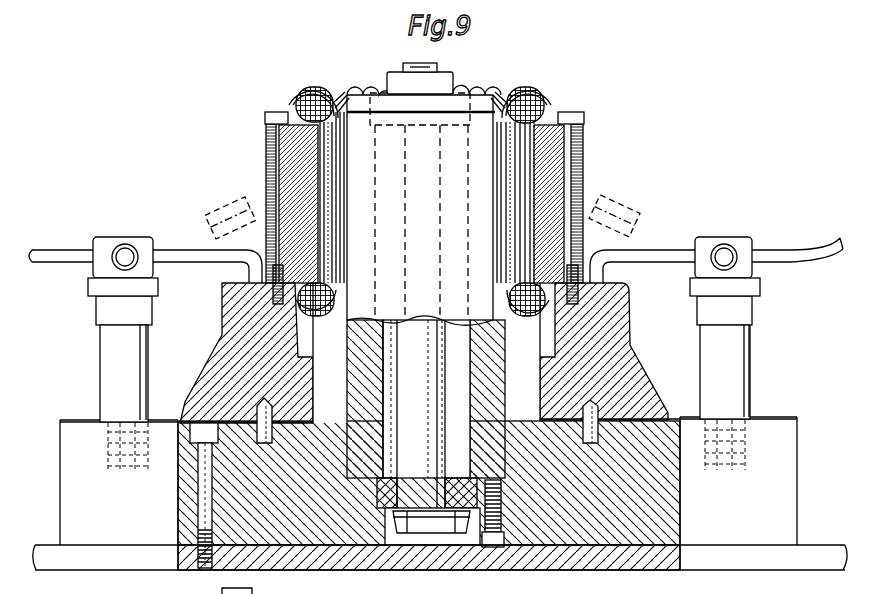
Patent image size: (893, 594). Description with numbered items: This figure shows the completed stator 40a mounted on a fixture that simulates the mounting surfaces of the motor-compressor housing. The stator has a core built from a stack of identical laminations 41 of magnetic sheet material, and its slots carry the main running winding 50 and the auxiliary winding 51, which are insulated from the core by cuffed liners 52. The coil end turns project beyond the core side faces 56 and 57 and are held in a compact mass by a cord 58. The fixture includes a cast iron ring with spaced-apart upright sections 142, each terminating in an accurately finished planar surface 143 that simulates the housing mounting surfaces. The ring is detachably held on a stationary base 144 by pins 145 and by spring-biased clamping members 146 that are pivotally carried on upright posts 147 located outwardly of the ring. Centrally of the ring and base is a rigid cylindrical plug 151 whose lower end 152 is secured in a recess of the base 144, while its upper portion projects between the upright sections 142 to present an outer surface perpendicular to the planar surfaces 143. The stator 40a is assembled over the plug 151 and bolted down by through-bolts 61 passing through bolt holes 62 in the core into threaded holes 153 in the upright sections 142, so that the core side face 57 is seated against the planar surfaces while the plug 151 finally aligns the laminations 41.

The stator 40a is at (490, 78).
The laminations 41 is at (298, 180).
The main running winding 50 is at (294, 103).
The auxiliary winding 51 is at (338, 112).
The cuffed liners 52 is at (302, 156).
The side face 56 is at (548, 126).
The side face 57 is at (300, 322).
The cord 58 is at (308, 86).
The through-bolts 61 is at (266, 118).
The bolt holes 62 is at (572, 163).
The upright sections 142 is at (233, 338).
The planar surface 143 is at (262, 256).
The stationary base 144 is at (78, 460).
The pins 145 is at (257, 420).
The clamping members 146 is at (60, 248).
The upright posts 147 is at (110, 364).
The cylindrical plug 151 is at (360, 126).
The end 152 is at (365, 495).
The threaded holes 153 is at (272, 296).